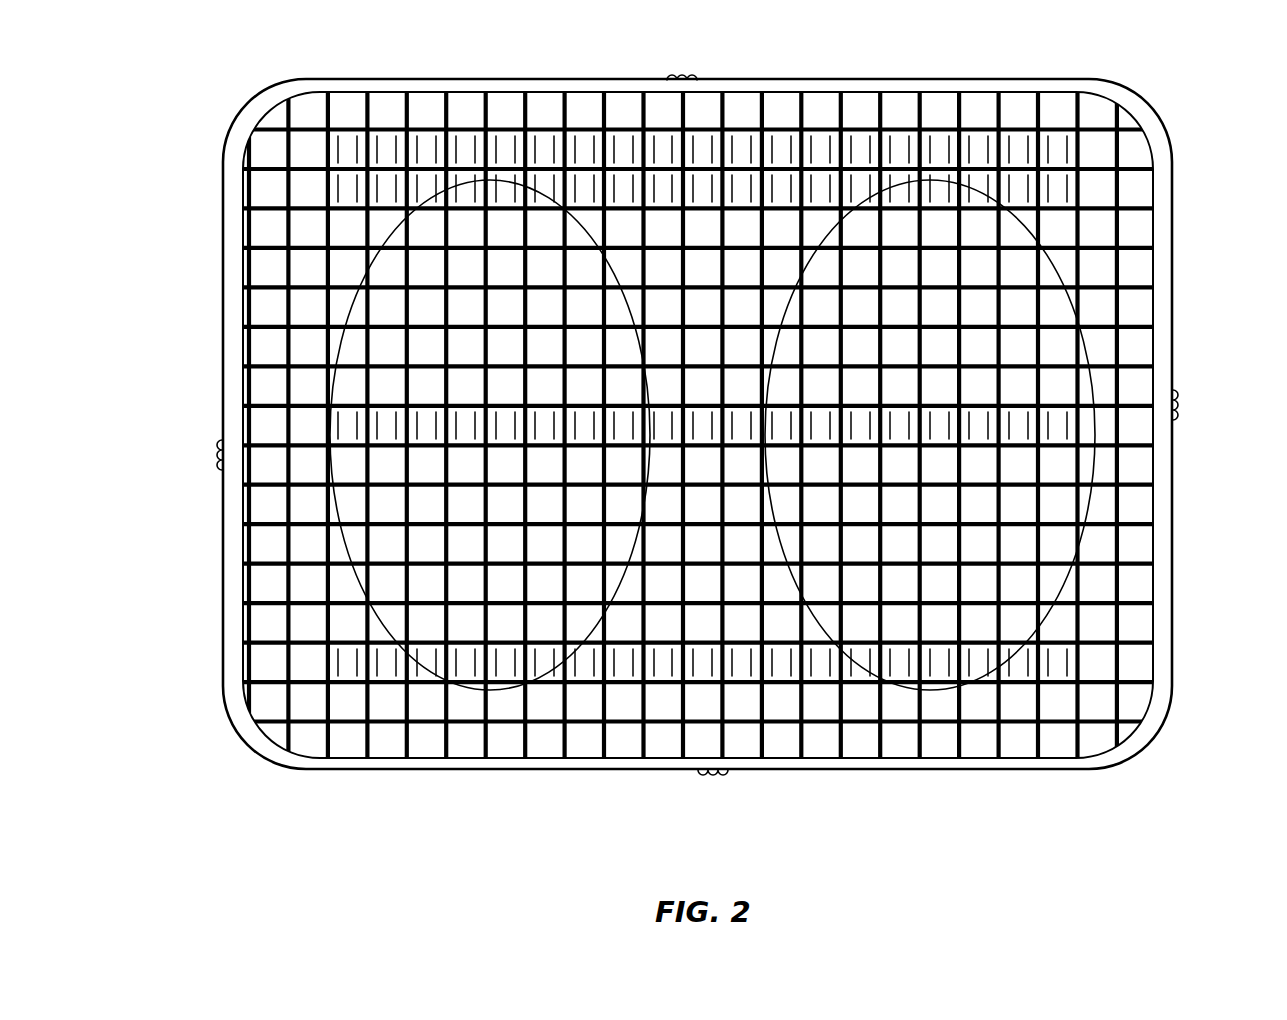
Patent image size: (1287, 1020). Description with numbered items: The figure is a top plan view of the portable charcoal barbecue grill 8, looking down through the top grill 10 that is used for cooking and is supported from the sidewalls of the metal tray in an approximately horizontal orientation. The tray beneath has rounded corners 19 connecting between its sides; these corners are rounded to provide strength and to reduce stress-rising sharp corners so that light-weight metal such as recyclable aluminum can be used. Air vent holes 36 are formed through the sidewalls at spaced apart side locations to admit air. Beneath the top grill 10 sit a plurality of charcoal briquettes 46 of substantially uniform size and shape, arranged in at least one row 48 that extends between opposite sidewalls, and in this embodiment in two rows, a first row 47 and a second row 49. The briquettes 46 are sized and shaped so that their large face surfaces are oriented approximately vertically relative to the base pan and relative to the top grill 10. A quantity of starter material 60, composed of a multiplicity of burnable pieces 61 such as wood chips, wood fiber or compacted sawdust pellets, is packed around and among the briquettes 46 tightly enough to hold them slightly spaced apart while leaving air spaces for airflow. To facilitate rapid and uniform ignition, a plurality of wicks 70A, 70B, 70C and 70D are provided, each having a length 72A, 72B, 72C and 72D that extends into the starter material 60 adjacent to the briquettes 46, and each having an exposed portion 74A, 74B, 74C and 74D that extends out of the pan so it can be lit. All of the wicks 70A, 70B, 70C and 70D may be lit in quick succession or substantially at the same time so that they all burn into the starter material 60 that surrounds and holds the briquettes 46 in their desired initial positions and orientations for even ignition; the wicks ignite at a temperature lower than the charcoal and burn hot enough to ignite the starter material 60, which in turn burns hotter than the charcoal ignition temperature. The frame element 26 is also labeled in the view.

The portable charcoal barbecue grill 8 is at (197, 207).
The top grill 10 is at (300, 272).
The corners 19 is at (1147, 742).
The frame 26 is at (1163, 662).
The air vent holes 36 is at (457, 115).
The charcoal briquettes 46 is at (817, 260).
The first row 47 is at (1100, 307).
The row of charcoal briquettes 48 is at (1060, 267).
The second row 49 is at (1062, 540).
The starter material 60 is at (783, 157).
The burnable pieces 61 is at (466, 655).
The wick 70A is at (1137, 385).
The wick 70B is at (255, 475).
The wick 70C is at (677, 117).
The wick 70D is at (740, 730).
The length 72A is at (950, 440).
The length 72B is at (415, 405).
The length 72C is at (632, 190).
The length 72D is at (718, 685).
The exposed portion 74A is at (1185, 410).
The exposed portion 74B is at (215, 445).
The exposed portion 74C is at (686, 73).
The exposed portion 74D is at (708, 778).